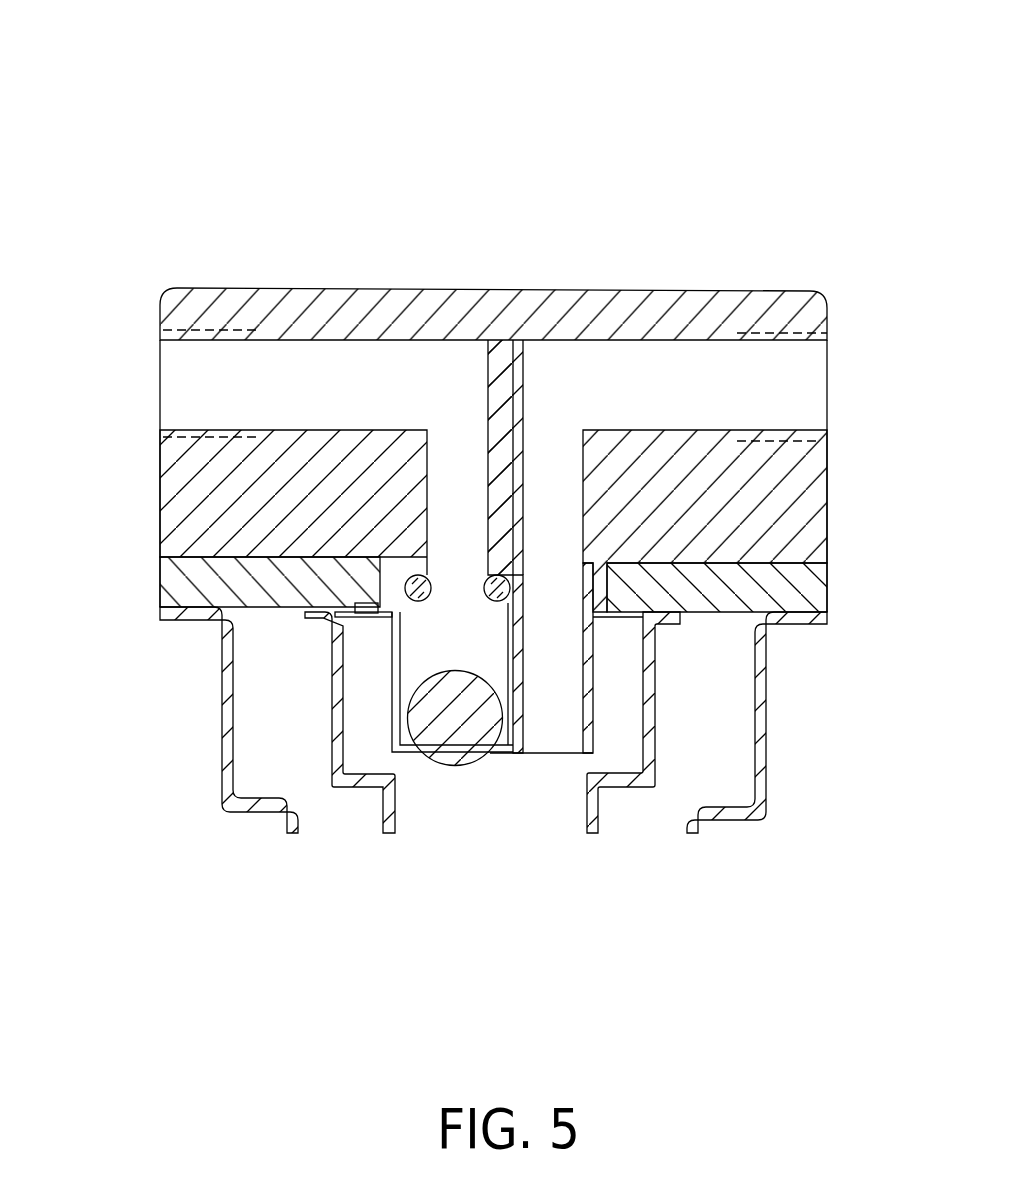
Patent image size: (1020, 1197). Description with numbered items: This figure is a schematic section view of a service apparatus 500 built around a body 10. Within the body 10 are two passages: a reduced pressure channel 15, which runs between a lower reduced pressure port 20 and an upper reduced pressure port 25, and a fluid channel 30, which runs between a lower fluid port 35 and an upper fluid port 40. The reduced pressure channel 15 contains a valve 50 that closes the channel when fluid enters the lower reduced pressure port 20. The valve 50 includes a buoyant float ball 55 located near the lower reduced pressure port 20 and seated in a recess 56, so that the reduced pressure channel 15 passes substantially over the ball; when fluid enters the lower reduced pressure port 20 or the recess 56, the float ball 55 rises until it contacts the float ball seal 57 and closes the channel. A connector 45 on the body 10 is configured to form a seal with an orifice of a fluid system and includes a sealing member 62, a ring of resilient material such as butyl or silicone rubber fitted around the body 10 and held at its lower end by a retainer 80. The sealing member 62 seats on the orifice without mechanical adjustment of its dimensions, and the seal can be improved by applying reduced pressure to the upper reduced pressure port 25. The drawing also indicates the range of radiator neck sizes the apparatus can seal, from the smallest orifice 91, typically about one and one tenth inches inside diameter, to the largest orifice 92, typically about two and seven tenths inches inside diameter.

The service apparatus 500 is at (526, 118).
The body 10 is at (498, 287).
The reduced pressure channel 15 is at (347, 380).
The fluid channel 30 is at (640, 380).
The upper fluid port 40 is at (827, 337).
The upper reduced pressure port 25 is at (160, 433).
The sealing member 62 is at (827, 590).
The retainer 80 is at (440, 629).
The valve 50 is at (392, 645).
The lower reduced pressure port 20 is at (333, 740).
The float ball seal 57 is at (490, 600).
The float ball 55 is at (453, 770).
The recess 56 is at (503, 762).
The lower fluid port 35 is at (594, 757).
The connector 45 is at (652, 657).
The largest orifice 92 is at (766, 720).
The smallest orifice 91 is at (764, 808).